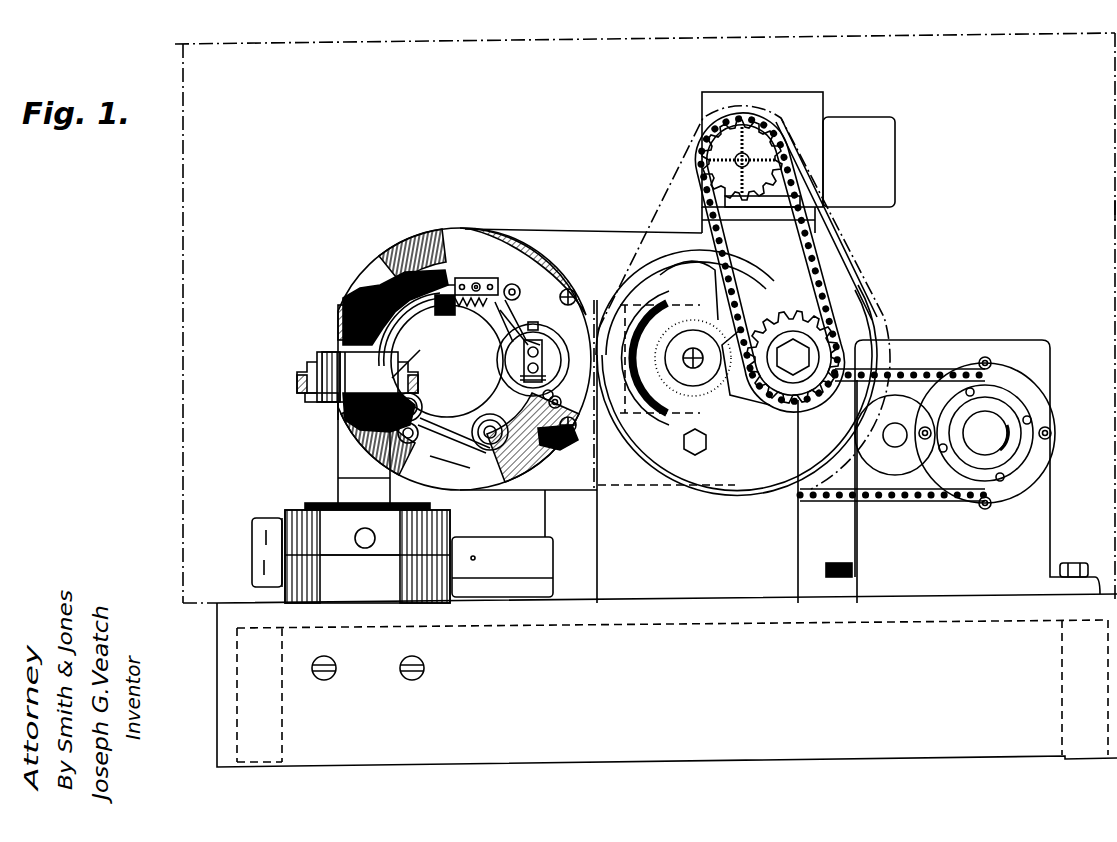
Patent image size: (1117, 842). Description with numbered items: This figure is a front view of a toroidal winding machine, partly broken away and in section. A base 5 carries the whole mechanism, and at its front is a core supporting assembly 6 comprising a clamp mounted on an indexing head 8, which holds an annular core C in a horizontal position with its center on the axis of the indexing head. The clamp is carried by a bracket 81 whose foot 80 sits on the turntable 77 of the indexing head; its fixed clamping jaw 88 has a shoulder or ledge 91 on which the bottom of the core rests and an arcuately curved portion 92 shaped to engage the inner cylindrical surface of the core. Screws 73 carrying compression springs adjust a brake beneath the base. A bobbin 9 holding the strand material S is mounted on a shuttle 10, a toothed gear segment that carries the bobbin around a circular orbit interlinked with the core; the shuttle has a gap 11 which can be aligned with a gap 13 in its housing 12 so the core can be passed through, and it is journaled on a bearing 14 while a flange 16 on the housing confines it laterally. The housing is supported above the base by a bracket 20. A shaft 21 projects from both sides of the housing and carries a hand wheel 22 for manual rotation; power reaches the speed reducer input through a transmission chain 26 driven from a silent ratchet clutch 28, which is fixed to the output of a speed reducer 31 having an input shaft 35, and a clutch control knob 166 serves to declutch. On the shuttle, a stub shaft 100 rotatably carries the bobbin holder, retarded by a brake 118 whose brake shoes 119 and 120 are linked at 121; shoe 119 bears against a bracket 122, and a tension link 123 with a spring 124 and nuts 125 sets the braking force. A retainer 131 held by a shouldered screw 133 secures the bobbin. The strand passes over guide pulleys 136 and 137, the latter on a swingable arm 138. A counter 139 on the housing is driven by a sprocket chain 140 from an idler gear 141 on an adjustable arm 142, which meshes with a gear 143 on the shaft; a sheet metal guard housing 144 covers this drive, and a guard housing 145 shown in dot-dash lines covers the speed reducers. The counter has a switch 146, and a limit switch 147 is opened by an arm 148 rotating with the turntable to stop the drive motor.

The base 5 is at (215, 618).
The core supporting assembly 6 is at (298, 506).
The indexing head 8 is at (372, 604).
The bobbin 9 is at (562, 356).
The shuttle 10 is at (378, 300).
The gap 11 is at (372, 390).
The housing 12 is at (534, 232).
The gap 13 is at (352, 380).
The bearing 14 is at (424, 308).
The flange 16 is at (440, 460).
The bracket 20 is at (656, 565).
The shaft 21 is at (692, 346).
The hand wheel 22 is at (668, 272).
The transmission chain 26 is at (912, 340).
The silent ratchet clutch 28 is at (1016, 360).
The speed reducer 31 is at (994, 340).
The input shaft 35 is at (890, 444).
The screws 73 is at (324, 680).
The turntable 77 is at (446, 522).
The foot 80 is at (346, 480).
The bracket 81 is at (338, 452).
The fixed clamping jaw 88 is at (338, 412).
The shoulder or ledge 91 is at (305, 398).
The arcuately curved portion 92 is at (418, 352).
The stub shaft 100 is at (522, 362).
The brake 118 is at (520, 296).
The brake shoe 119 is at (506, 350).
The brake shoe 120 is at (556, 392).
The link 121 is at (562, 406).
The bracket 122 is at (462, 278).
The tension link 123 is at (438, 284).
The spring 124 is at (462, 308).
The nuts 125 is at (440, 306).
The retainer 131 is at (548, 332).
The shouldered screw 133 is at (520, 378).
The guide pulley 136 is at (486, 450).
The guide pulley 137 is at (420, 408).
The arm 138 is at (408, 444).
The counter 139 is at (768, 92).
The sprocket chain 140 is at (836, 292).
The idler gear 141 is at (796, 300).
The arm 142 is at (752, 418).
The gear 143 is at (706, 410).
The sheet metal guard housing 144 is at (668, 152).
The guard housing 145 is at (1110, 212).
The switch 146 is at (868, 117).
The limit switch 147 is at (516, 520).
The arm 148 is at (250, 526).
The clutch control knob 166 is at (1040, 402).
The annular core C is at (297, 382).
The strand material S is at (452, 426).